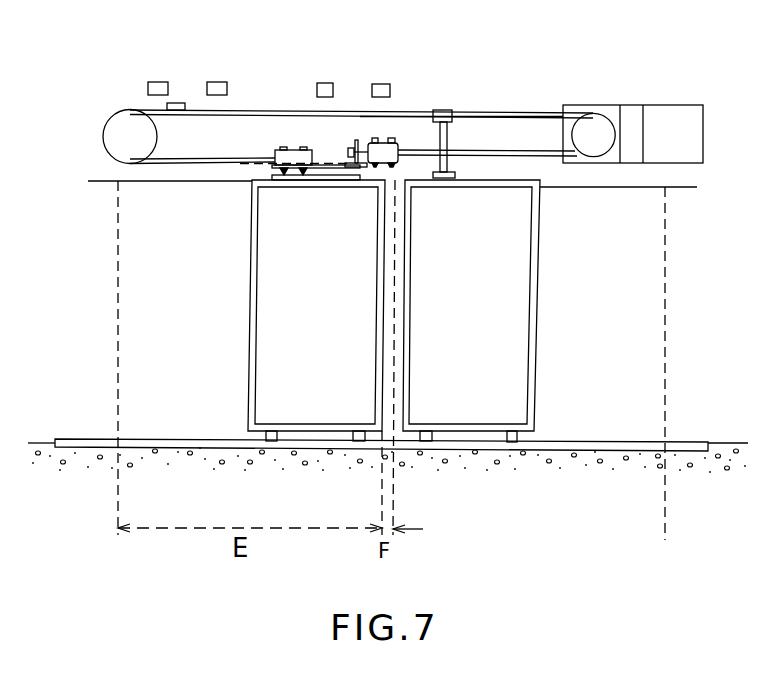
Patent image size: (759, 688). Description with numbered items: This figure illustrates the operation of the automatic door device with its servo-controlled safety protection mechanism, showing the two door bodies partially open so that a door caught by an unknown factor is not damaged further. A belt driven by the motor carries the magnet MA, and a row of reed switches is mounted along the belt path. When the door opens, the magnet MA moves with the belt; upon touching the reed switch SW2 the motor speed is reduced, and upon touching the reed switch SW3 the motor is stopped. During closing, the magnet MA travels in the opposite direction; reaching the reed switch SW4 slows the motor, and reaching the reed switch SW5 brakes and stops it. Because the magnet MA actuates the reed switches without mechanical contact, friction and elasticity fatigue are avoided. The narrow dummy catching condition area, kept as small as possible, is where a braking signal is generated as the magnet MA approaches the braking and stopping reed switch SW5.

The reed switch SW5 is at (157, 82).
The reed switch SW4 is at (220, 82).
The reed switch SW2 is at (323, 82).
The reed switch SW3 is at (385, 82).
The magnet MA is at (167, 106).